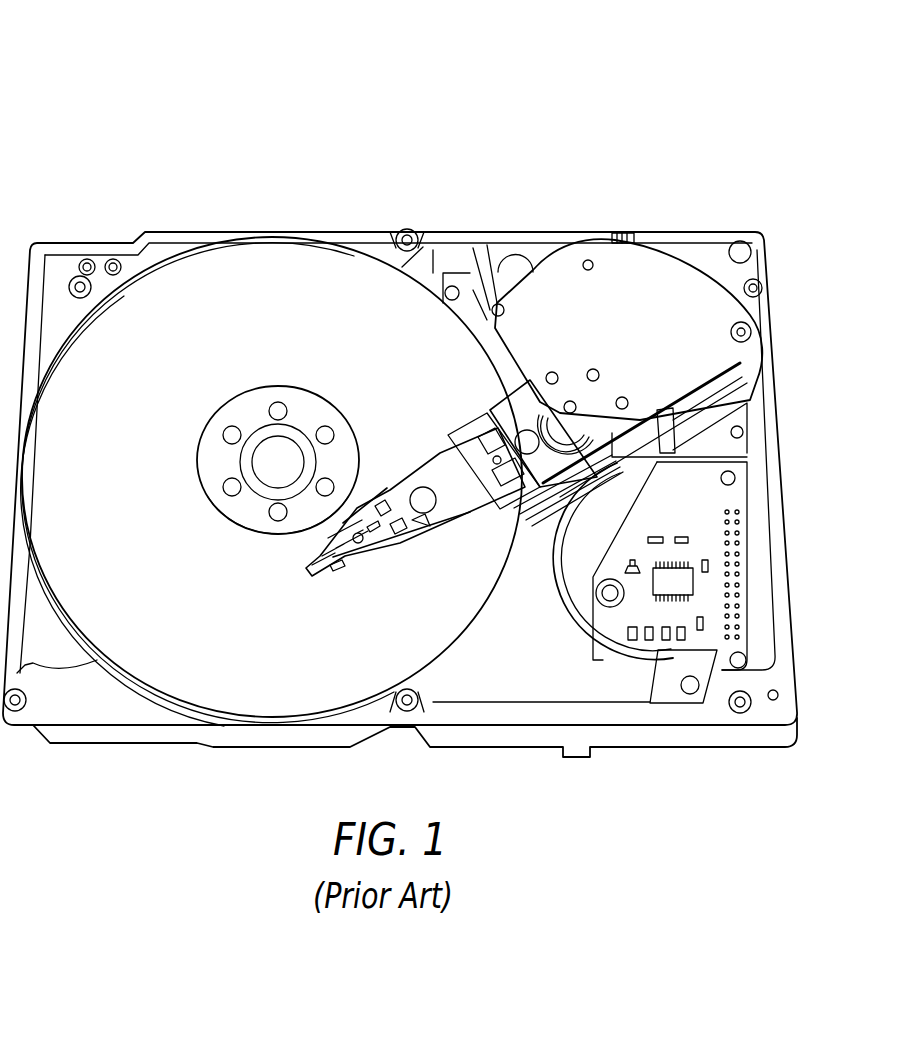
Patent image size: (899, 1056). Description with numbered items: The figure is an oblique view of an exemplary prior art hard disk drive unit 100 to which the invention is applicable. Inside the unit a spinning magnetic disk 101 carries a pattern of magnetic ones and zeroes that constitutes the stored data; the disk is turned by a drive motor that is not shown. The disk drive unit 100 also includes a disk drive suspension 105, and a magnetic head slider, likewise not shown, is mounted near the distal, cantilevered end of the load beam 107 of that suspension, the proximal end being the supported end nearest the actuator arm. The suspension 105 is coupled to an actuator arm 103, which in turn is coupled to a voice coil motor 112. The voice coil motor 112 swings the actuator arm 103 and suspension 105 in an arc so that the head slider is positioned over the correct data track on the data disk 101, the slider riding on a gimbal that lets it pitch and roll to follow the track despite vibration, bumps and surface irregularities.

The disk drive unit 100 is at (284, 180).
The magnetic disk 101 is at (229, 290).
The actuator arm 103 is at (553, 478).
The disk drive suspension 105 is at (345, 582).
The load beam 107 is at (393, 492).
The voice coil motor 112 is at (606, 330).